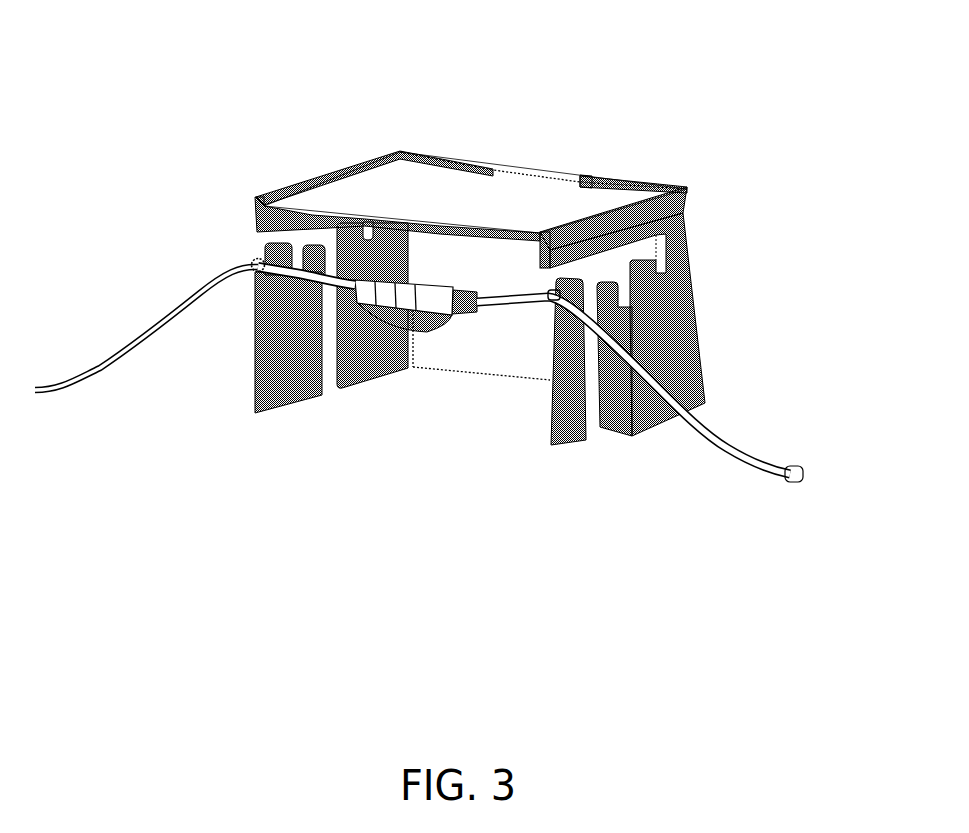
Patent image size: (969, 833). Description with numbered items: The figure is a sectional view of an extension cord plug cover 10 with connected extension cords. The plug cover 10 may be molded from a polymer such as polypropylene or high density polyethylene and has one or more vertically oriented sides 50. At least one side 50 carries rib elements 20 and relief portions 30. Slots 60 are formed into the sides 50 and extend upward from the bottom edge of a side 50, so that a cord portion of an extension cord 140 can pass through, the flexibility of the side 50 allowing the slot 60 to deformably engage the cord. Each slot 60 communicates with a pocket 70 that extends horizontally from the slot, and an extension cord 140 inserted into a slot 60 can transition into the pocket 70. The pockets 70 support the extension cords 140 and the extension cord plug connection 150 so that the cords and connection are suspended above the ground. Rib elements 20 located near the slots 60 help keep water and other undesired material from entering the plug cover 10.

The extension cord plug cover 10 is at (247, 125).
The rib element 20 is at (431, 158).
The relief portion 30 is at (533, 177).
The side 50 is at (687, 315).
The slot 60 is at (598, 422).
The pocket 70 is at (256, 271).
The extension cord 140 is at (75, 380).
The extension cord plug connection 150 is at (413, 323).